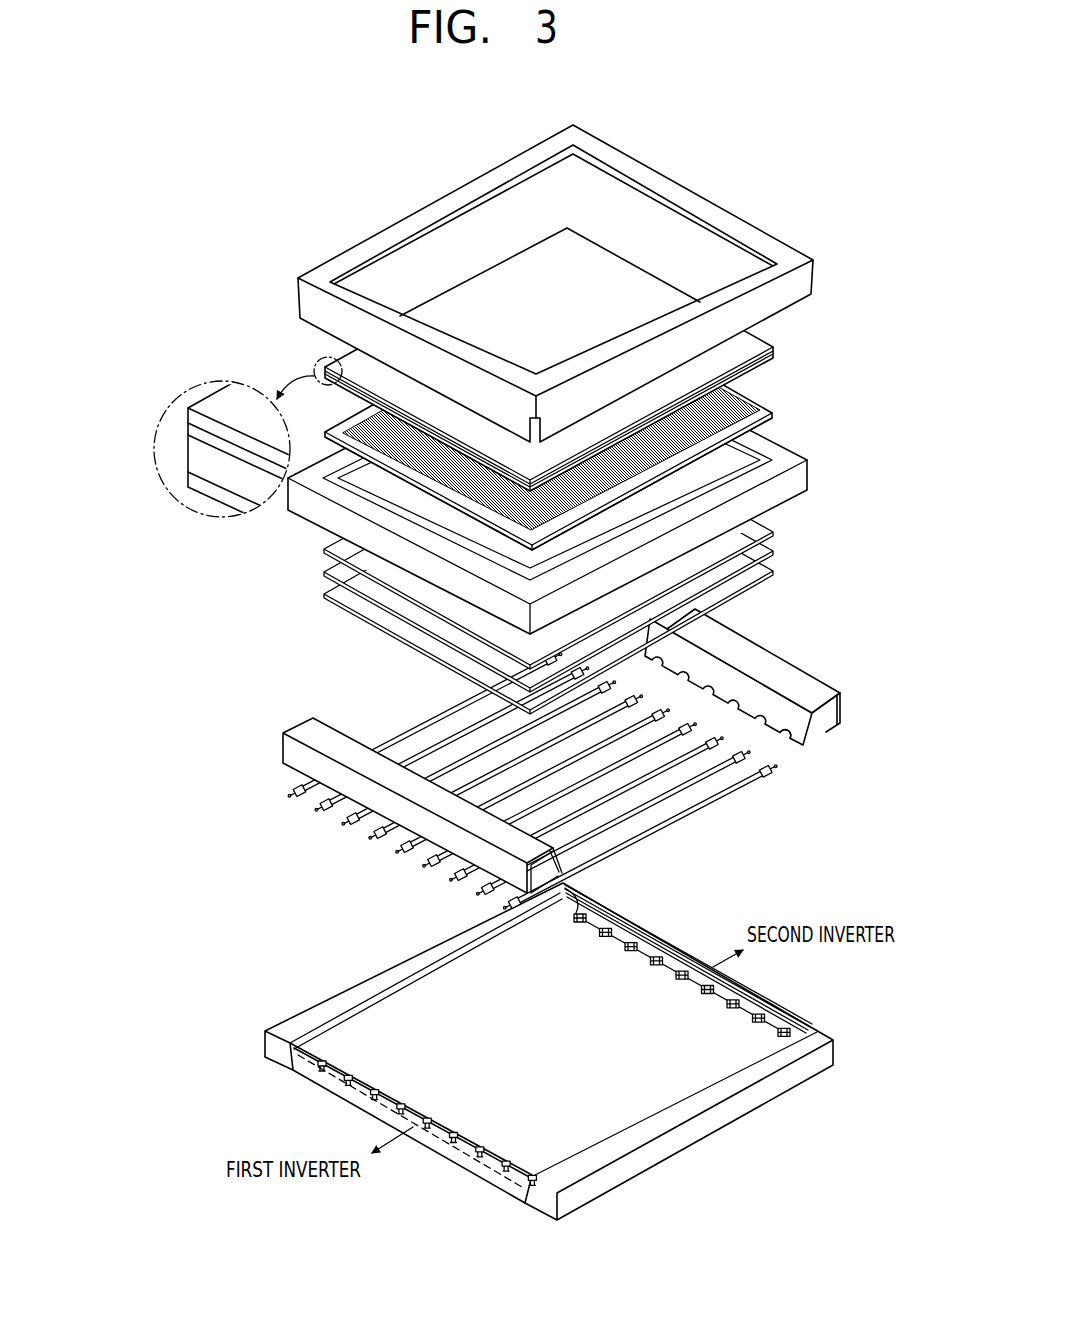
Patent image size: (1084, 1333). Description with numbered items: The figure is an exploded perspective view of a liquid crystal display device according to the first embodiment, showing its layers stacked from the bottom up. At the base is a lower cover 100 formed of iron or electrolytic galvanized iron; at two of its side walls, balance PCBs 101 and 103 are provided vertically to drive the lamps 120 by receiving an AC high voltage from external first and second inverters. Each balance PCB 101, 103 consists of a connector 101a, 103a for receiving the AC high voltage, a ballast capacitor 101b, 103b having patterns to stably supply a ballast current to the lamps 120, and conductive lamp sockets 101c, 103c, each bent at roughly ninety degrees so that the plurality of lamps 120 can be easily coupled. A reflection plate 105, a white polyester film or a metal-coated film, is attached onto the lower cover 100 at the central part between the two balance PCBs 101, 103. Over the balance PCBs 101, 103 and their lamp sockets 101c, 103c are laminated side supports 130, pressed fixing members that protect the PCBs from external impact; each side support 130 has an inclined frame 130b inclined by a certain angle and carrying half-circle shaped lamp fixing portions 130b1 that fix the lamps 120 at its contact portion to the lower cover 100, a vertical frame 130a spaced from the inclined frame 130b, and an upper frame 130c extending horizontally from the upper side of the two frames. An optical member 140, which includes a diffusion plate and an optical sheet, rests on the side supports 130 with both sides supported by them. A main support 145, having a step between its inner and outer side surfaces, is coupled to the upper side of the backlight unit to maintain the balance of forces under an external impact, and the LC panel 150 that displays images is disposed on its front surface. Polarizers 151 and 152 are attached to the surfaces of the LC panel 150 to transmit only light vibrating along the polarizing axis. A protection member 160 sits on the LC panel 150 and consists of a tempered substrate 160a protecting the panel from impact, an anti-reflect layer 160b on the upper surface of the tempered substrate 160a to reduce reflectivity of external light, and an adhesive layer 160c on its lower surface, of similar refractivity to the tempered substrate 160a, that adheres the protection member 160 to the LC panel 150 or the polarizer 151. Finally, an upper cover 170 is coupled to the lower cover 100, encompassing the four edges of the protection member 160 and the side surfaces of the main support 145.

The lower cover 100 is at (773, 1062).
The balance PCB 101 is at (520, 1165).
The connector 101a is at (397, 1120).
The ballast capacitor 101b is at (300, 1063).
The lamp socket 101c is at (332, 1058).
The balance PCB 103 is at (778, 1022).
The connector 103a is at (680, 958).
The ballast capacitor 103b is at (663, 958).
The lamp socket 103c is at (631, 943).
The reflection plate 105 is at (596, 1113).
The lamps 120 is at (760, 777).
The side support 130 is at (767, 638).
The vertical frame 130a is at (842, 698).
The inclined frame 130b is at (815, 722).
The lamp fixing portion 130b1 is at (800, 738).
The upper frame 130c is at (805, 678).
The optical member 140 is at (782, 532).
The main support 145 is at (802, 473).
The LC panel 150 is at (781, 411).
The polarizer 151 is at (762, 393).
The polarizer 152 is at (768, 423).
The protection member 160 is at (791, 340).
The tempered substrate 160a is at (188, 457).
The anti-reflect layer 160b is at (188, 422).
The adhesive layer 160c is at (188, 480).
The upper cover 170 is at (707, 207).